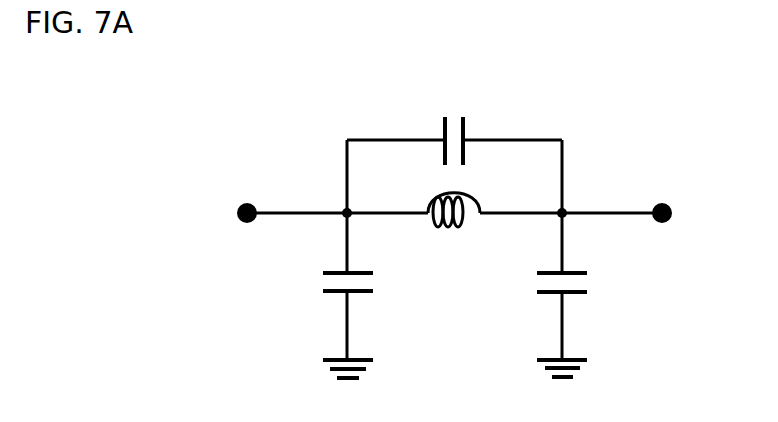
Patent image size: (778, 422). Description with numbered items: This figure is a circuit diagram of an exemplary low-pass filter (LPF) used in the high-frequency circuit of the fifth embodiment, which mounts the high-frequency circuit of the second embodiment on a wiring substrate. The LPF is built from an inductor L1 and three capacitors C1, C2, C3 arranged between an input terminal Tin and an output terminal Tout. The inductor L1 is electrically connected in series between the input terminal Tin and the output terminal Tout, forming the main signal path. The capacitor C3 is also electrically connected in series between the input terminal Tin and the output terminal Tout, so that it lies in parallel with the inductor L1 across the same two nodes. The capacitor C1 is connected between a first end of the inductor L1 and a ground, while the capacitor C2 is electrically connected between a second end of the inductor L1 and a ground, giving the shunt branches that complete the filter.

The capacitor C1 is at (363, 284).
The capacitor C2 is at (578, 285).
The capacitor C3 is at (454, 120).
The inductor L1 is at (450, 230).
The input terminal Tin is at (245, 197).
The output terminal Tout is at (660, 197).